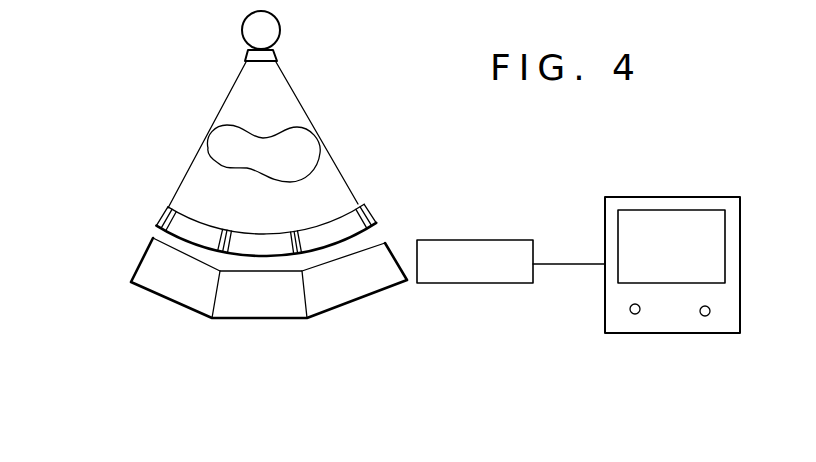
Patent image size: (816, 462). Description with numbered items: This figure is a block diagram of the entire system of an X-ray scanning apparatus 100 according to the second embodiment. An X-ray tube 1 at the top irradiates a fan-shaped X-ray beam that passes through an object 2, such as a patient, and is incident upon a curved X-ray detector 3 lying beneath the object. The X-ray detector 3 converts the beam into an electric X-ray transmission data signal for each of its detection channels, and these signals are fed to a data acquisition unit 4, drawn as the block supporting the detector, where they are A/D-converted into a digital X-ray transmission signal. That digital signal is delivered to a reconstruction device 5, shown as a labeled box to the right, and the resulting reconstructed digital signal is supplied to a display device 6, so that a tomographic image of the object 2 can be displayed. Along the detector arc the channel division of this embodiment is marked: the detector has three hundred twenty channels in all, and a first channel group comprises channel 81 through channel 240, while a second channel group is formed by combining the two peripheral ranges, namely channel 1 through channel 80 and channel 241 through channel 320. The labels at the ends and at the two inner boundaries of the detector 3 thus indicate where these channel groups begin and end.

The X-ray tube 1 is at (281, 27).
The object 2 is at (307, 143).
The X-ray detector 3 is at (240, 202).
The data acquisition unit 4 is at (140, 263).
The reconstruction device 5 is at (485, 240).
The display device 6 is at (668, 198).
The X-ray scanning apparatus 100 is at (430, 175).
The channel 80 is at (298, 231).
The channel 81 is at (291, 232).
The channel 240 is at (232, 231).
The channel 241 is at (223, 229).
The channel 320 is at (160, 220).